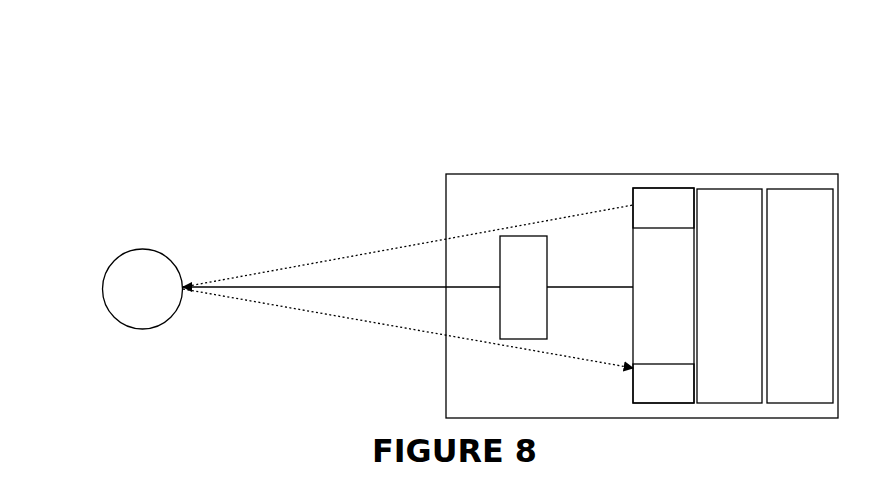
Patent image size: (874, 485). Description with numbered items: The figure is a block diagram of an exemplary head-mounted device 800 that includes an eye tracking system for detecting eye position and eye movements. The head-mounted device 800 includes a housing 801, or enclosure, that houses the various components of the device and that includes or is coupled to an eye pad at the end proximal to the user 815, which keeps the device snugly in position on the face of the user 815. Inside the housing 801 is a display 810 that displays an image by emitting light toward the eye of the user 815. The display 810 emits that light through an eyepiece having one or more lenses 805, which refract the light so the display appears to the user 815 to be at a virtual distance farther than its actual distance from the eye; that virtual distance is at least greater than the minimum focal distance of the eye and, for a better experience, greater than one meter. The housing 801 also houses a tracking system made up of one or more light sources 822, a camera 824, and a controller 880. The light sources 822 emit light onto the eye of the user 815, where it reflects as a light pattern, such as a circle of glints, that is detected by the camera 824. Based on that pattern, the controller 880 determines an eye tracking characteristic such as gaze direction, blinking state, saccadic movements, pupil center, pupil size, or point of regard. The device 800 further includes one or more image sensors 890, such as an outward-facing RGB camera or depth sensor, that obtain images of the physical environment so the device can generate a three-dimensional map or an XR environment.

The head-mounted device (HMD) 800 is at (340, 68).
The housing 801 is at (496, 202).
The lens 805 is at (540, 296).
The display 810 is at (680, 296).
The user 815 is at (160, 298).
The light source 822 is at (680, 216).
The camera 824 is at (680, 396).
The controller 880 is at (746, 296).
The image sensor 890 is at (818, 296).